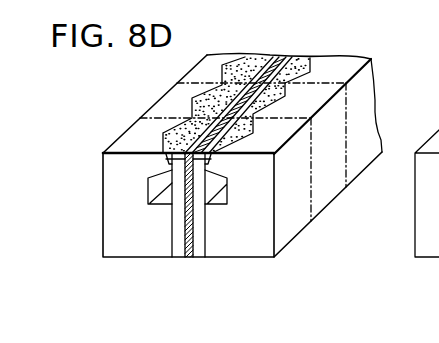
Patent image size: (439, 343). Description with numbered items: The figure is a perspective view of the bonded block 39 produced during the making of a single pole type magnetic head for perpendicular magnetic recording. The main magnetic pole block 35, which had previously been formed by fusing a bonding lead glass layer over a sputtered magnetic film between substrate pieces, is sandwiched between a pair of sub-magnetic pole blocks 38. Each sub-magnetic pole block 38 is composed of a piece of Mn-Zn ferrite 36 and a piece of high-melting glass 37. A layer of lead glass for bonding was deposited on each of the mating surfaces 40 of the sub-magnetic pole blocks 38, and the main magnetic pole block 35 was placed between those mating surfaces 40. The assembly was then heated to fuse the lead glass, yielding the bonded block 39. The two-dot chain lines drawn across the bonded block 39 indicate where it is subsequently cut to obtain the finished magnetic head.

The main magnetic pole block 35 is at (184, 258).
The Mn-Zn ferrite 36 is at (118, 248).
The high-melting glass 37 is at (170, 135).
The sub-magnetic pole block 38 is at (102, 178).
The bonded block 39 is at (354, 55).
The mating surface 40 is at (172, 259).